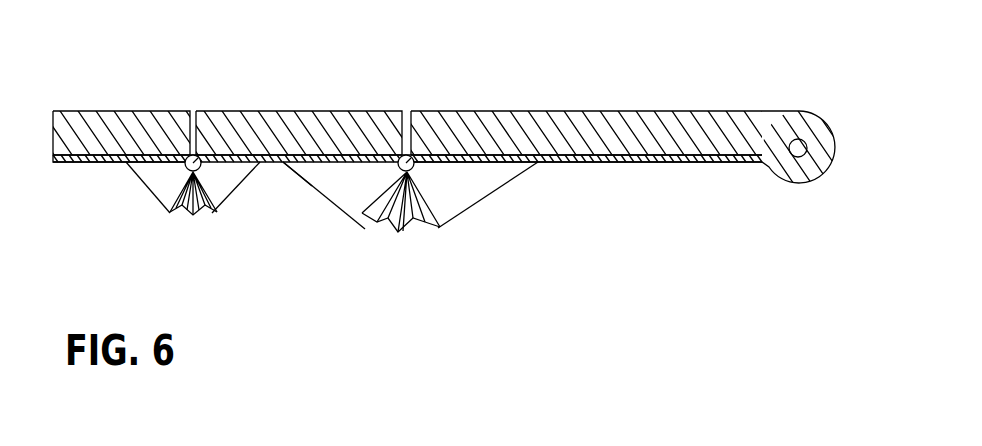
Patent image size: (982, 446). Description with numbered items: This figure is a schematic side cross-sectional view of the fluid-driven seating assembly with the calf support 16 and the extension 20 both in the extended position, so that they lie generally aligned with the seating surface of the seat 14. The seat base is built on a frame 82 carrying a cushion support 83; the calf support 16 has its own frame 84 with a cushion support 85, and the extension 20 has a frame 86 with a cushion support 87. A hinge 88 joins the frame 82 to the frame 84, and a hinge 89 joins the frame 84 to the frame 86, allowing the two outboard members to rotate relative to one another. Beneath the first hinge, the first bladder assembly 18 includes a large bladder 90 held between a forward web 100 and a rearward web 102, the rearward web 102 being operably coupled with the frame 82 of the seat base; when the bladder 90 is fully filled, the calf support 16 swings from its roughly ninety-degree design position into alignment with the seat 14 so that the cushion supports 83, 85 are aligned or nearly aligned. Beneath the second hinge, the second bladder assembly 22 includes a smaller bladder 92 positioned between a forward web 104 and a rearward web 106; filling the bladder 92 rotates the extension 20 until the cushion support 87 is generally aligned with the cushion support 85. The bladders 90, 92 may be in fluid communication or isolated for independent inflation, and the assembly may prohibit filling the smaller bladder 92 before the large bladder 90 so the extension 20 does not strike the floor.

The seat 14 is at (572, 112).
The calf support 16 is at (288, 112).
The first bladder assembly 18 is at (421, 243).
The extension 20 is at (123, 112).
The second bladder assembly 22 is at (185, 233).
The frame 82 is at (600, 163).
The cushion support 83 is at (672, 128).
The frame 84 is at (300, 165).
The cushion support 85 is at (345, 128).
The frame 86 is at (93, 163).
The cushion support 87 is at (89, 118).
The hinge 88 is at (412, 157).
The hinge 89 is at (199, 157).
The bladder 90 is at (387, 223).
The bladder 92 is at (187, 213).
The forward web 100 is at (348, 197).
The rearward web 102 is at (470, 180).
The forward web 104 is at (163, 175).
The rearward web 106 is at (225, 177).